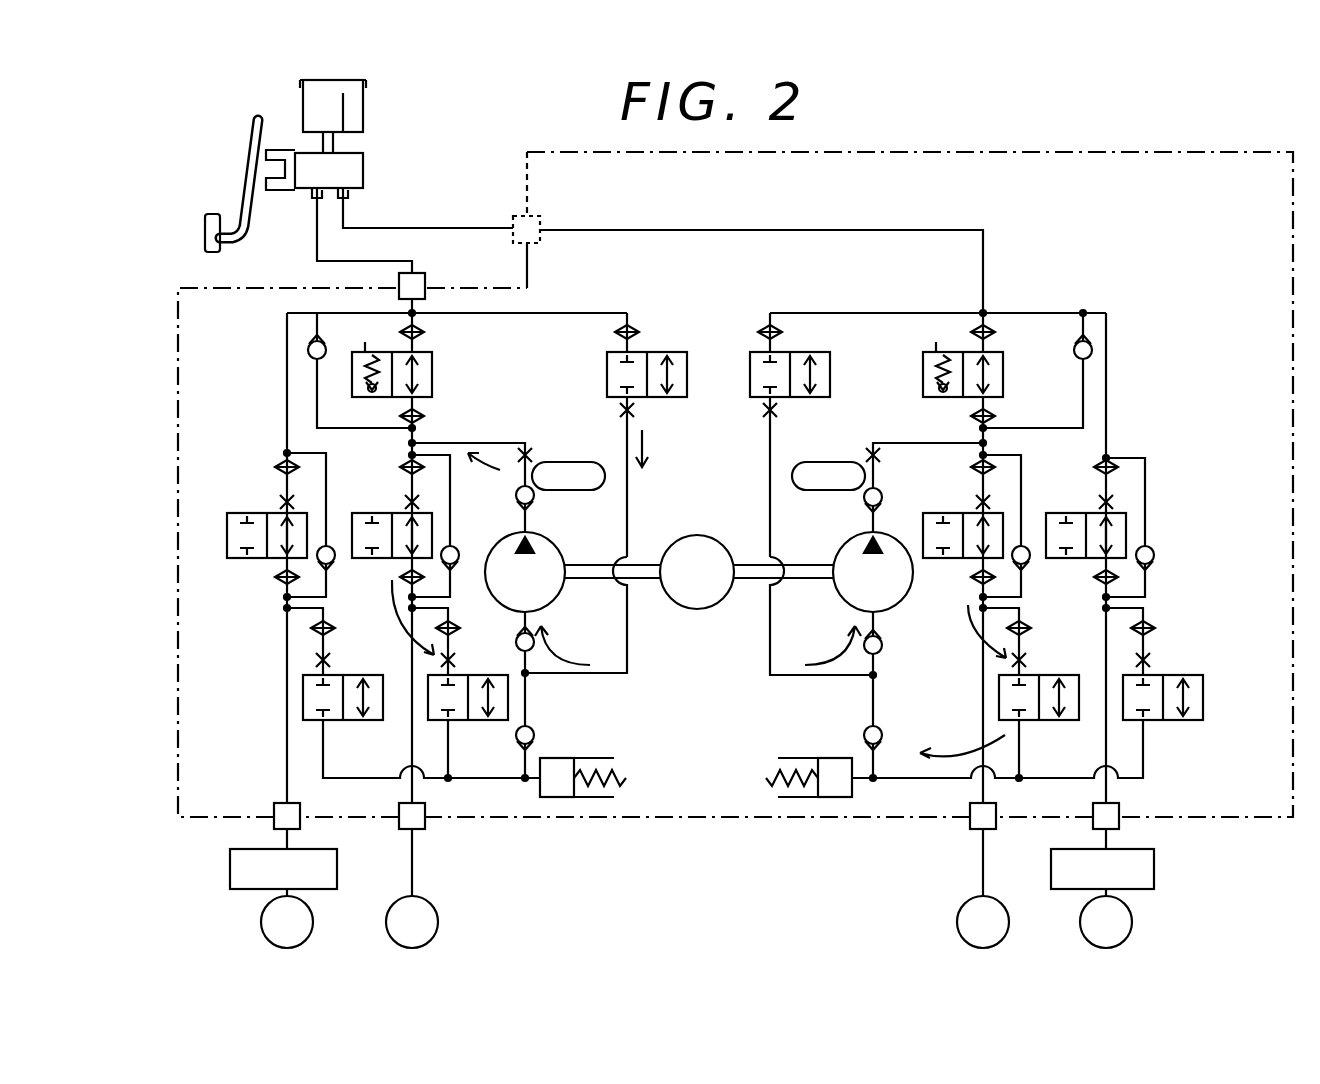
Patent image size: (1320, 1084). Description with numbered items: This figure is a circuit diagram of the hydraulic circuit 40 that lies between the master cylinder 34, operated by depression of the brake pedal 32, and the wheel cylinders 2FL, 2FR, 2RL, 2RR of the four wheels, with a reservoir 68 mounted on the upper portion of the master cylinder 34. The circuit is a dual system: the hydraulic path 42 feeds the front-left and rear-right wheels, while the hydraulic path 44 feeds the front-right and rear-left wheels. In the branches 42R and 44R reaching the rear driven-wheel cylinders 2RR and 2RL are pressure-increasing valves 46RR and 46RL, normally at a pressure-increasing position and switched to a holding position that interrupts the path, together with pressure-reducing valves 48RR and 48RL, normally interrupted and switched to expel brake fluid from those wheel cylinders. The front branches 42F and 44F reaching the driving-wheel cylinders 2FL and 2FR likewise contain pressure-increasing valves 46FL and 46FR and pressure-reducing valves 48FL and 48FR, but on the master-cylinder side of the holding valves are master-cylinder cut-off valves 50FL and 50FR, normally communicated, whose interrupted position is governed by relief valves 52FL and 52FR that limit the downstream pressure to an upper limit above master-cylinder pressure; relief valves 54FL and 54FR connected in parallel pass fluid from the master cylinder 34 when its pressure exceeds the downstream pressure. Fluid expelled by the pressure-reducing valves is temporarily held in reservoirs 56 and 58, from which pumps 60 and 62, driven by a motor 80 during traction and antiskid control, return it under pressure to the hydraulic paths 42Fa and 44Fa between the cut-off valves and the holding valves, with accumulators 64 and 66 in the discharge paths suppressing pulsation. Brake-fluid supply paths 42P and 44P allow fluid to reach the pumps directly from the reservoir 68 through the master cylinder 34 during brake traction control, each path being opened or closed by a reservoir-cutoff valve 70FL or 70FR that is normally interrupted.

The wheel cylinder 2RR is at (261, 922).
The wheel cylinder 2FL is at (438, 923).
The wheel cylinder 2FR is at (957, 921).
The wheel cylinder 2RL is at (1132, 923).
The brake pedal 32 is at (213, 214).
The master cylinder 34 is at (363, 174).
The hydraulic circuit 40 is at (870, 154).
The hydraulic path 42 is at (563, 294).
The hydraulic path 44 is at (1111, 295).
The hydraulic path 42F is at (425, 333).
The hydraulic path 42R is at (287, 392).
The hydraulic path 42Fa is at (400, 462).
The brake-fluid supply path 42P is at (628, 500).
The hydraulic path 44F is at (972, 333).
The hydraulic path 44R is at (1106, 396).
The hydraulic path 44Fa is at (885, 470).
The brake-fluid supply path 44P is at (770, 500).
The pressure-increasing valve 46RR is at (227, 526).
The pressure-increasing valve 46FL is at (352, 526).
The pressure-increasing valve 46FR is at (923, 526).
The pressure-increasing valve 46RL is at (1046, 526).
The pressure-reducing valve 48RR is at (303, 700).
The pressure-reducing valve 48FL is at (461, 694).
The pressure-reducing valve 48FR is at (1033, 694).
The pressure-reducing valve 48RL is at (1046, 693).
The master-cylinder cut-off valve 50FL is at (432, 376).
The master-cylinder cut-off valve 50FR is at (1003, 377).
The relief valve 52FL is at (372, 345).
The relief valve 52FR is at (925, 384).
The relief valve 54FL is at (306, 356).
The relief valve 54FR is at (1074, 354).
The reservoir 56 is at (562, 758).
The reservoir 58 is at (830, 758).
The pump 60 is at (553, 547).
The pump 62 is at (846, 547).
The accumulator 64 is at (569, 462).
The accumulator 66 is at (830, 462).
The reservoir 68 is at (364, 108).
The reservoir-cutoff valve 70FL is at (607, 366).
The reservoir-cutoff valve 70FR is at (838, 346).
The motor 80 is at (697, 535).